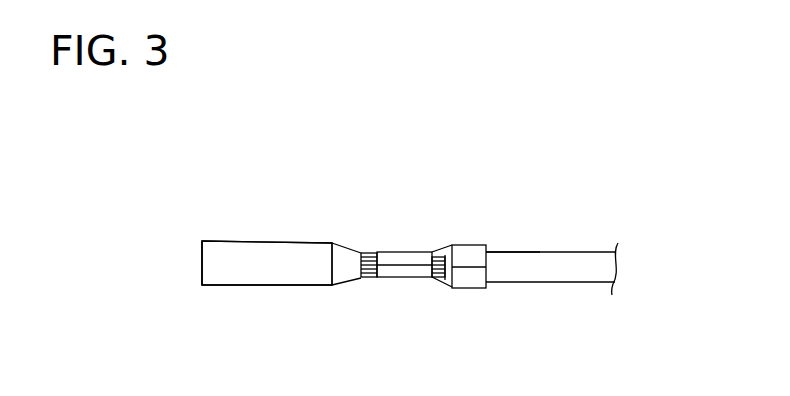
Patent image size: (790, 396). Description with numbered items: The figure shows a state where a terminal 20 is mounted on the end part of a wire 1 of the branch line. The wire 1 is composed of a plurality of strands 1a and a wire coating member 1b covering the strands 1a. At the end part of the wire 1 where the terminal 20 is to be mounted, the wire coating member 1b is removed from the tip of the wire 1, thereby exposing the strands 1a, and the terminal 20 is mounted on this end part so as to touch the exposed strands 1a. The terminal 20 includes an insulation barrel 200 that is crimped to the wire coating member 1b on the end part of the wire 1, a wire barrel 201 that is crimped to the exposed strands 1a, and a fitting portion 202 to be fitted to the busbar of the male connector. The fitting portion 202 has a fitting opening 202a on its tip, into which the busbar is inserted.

The wire 1 is at (560, 262).
The strands 1a is at (370, 253).
The wire coating member 1b is at (508, 260).
The terminal 20 is at (277, 238).
The insulation barrel 200 is at (468, 277).
The wire barrel 201 is at (402, 269).
The fitting portion 202 is at (285, 272).
The fitting opening 202a is at (202, 250).